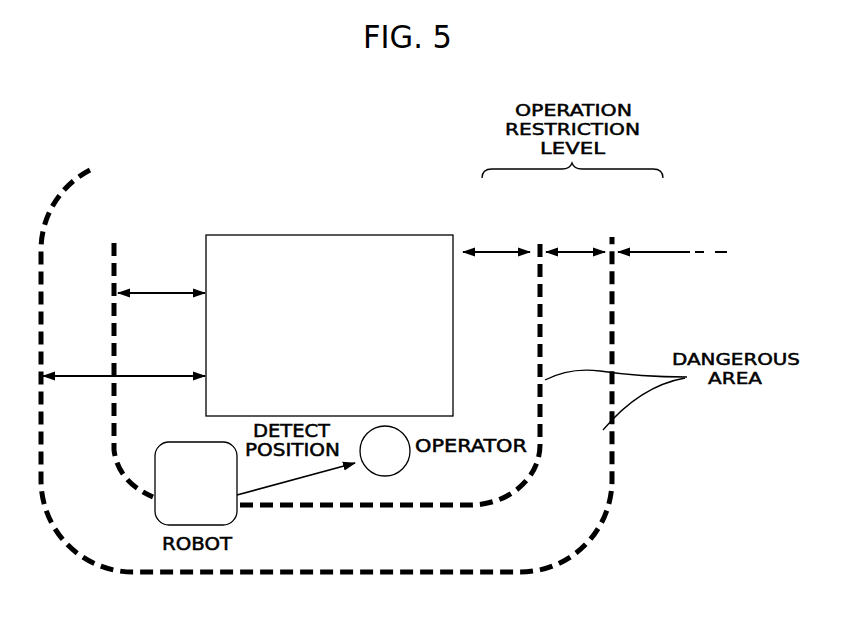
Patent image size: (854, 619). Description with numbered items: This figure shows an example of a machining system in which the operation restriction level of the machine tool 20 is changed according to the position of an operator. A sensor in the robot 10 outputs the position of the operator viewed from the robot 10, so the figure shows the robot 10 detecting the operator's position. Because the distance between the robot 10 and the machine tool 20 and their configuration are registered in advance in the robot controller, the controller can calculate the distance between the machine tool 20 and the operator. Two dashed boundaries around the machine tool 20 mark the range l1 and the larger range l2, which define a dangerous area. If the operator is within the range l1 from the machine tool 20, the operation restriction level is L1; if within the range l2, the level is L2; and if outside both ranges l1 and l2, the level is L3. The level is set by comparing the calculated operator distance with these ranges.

The robot 10 is at (186, 442).
The machine tool 20 is at (400, 235).
The range l1 is at (161, 278).
The range l2 is at (124, 362).
The operation restriction level L1 is at (496, 229).
The operation restriction level L2 is at (575, 229).
The operation restriction level L3 is at (672, 229).